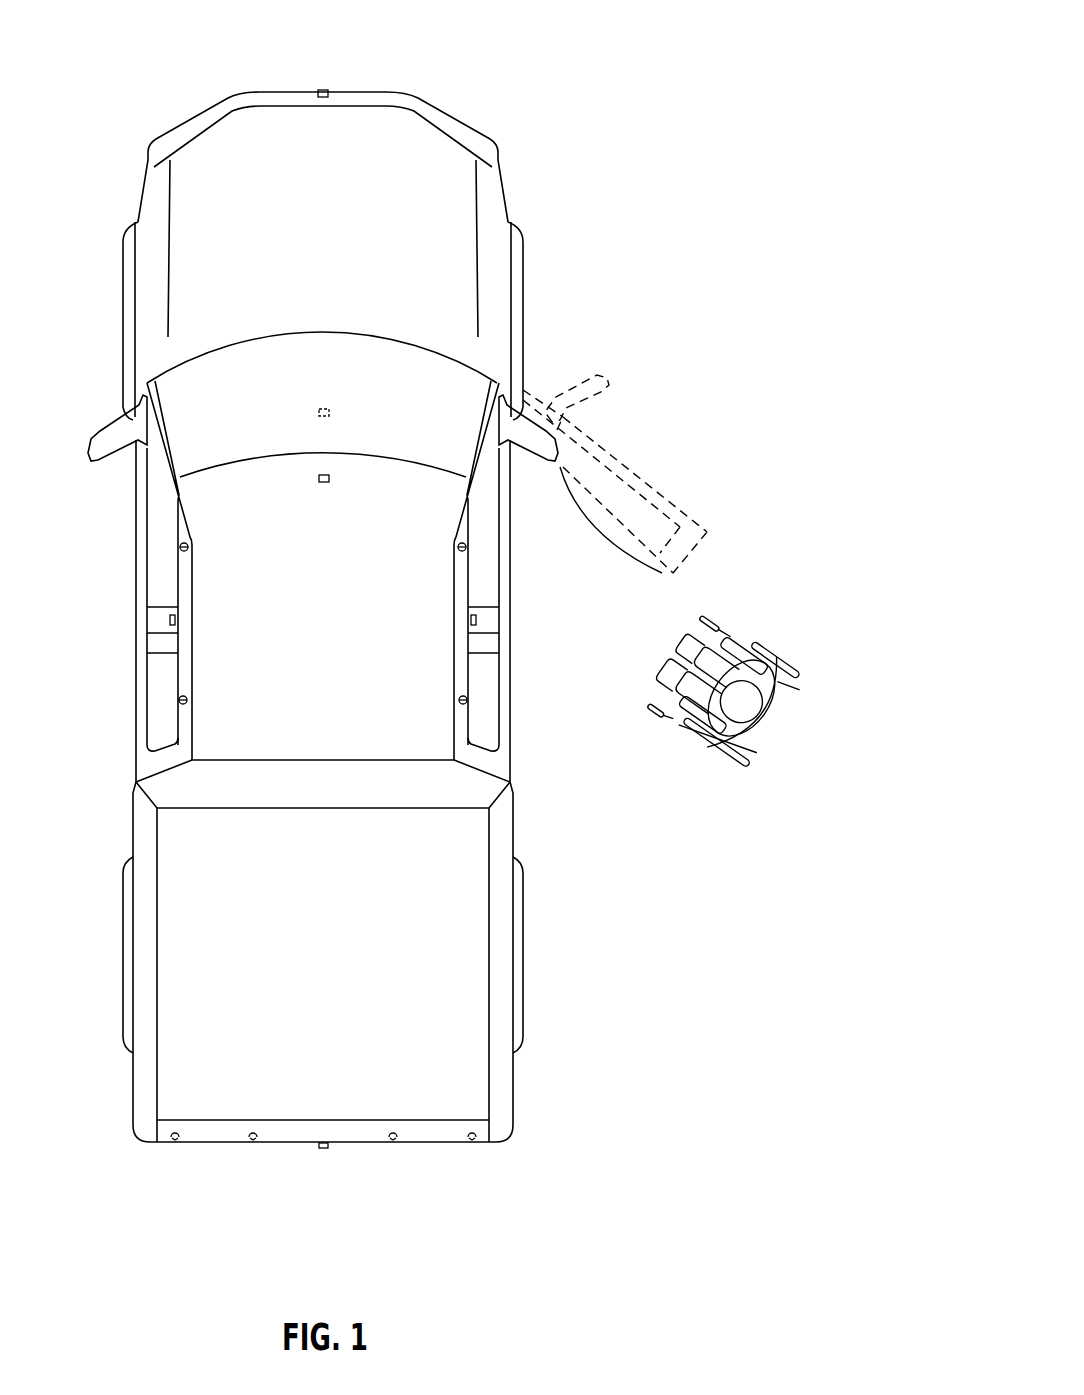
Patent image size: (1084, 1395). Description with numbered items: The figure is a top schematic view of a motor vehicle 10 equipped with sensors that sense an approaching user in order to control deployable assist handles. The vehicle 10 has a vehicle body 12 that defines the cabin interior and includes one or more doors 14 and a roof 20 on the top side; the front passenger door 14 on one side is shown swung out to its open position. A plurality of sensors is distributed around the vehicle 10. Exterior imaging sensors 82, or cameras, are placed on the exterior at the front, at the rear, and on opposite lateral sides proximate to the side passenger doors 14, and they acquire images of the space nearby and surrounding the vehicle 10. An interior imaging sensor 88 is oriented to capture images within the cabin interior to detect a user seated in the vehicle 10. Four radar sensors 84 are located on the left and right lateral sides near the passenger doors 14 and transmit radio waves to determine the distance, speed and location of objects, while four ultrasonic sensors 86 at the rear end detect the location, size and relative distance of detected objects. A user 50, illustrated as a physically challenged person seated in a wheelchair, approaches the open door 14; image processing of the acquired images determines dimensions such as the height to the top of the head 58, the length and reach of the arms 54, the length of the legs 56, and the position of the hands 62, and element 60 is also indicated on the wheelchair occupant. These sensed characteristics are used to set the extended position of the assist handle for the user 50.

The motor vehicle 10 is at (678, 62).
The vehicle body 12 is at (487, 230).
The door 14 is at (145, 495).
The roof 20 is at (370, 715).
The user 50 is at (733, 730).
The arm 54 is at (745, 650).
The legs 56 is at (708, 657).
The head 58 is at (753, 710).
The wheelchair footrest 60 is at (698, 697).
The hand 62 is at (725, 640).
The exterior imaging sensor 82 is at (325, 89).
The radar sensor 84 is at (180, 547).
The ultrasonic sensor 86 is at (175, 1143).
The interior imaging sensor 88 is at (324, 410).